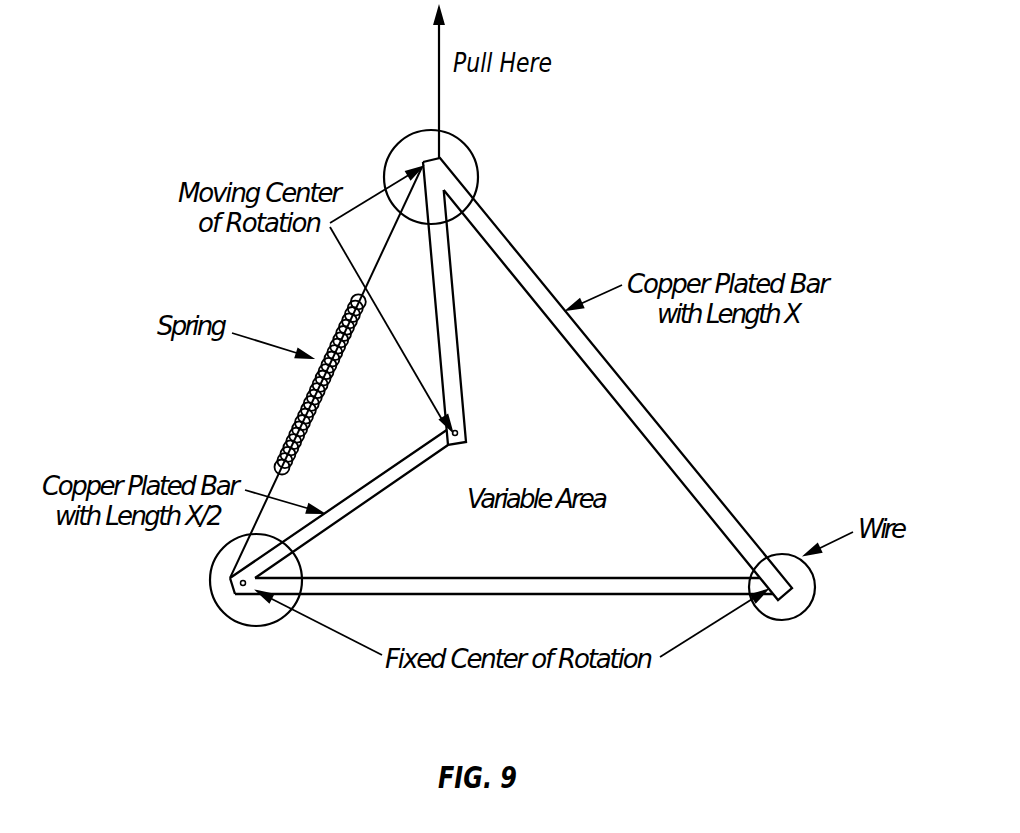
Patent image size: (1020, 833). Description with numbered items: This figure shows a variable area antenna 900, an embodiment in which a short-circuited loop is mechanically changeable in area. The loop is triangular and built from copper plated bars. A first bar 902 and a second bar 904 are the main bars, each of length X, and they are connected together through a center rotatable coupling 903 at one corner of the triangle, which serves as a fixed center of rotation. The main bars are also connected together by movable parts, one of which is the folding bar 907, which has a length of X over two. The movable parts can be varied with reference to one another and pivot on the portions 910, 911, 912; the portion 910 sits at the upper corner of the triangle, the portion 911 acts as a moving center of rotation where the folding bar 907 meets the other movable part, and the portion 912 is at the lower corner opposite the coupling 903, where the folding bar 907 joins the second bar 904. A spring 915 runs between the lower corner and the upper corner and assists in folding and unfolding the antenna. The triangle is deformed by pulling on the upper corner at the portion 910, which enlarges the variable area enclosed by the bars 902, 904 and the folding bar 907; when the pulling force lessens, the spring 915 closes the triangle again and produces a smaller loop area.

The variable area linkage device 900 is at (519, 379).
The first bar 902 is at (673, 438).
The center rotatable coupling 903 is at (807, 590).
The second bar 904 is at (568, 578).
The movable part 907 is at (367, 503).
The portion 910 is at (478, 163).
The portion 911 is at (447, 432).
The portion 912 is at (222, 585).
The spring 915 is at (299, 414).